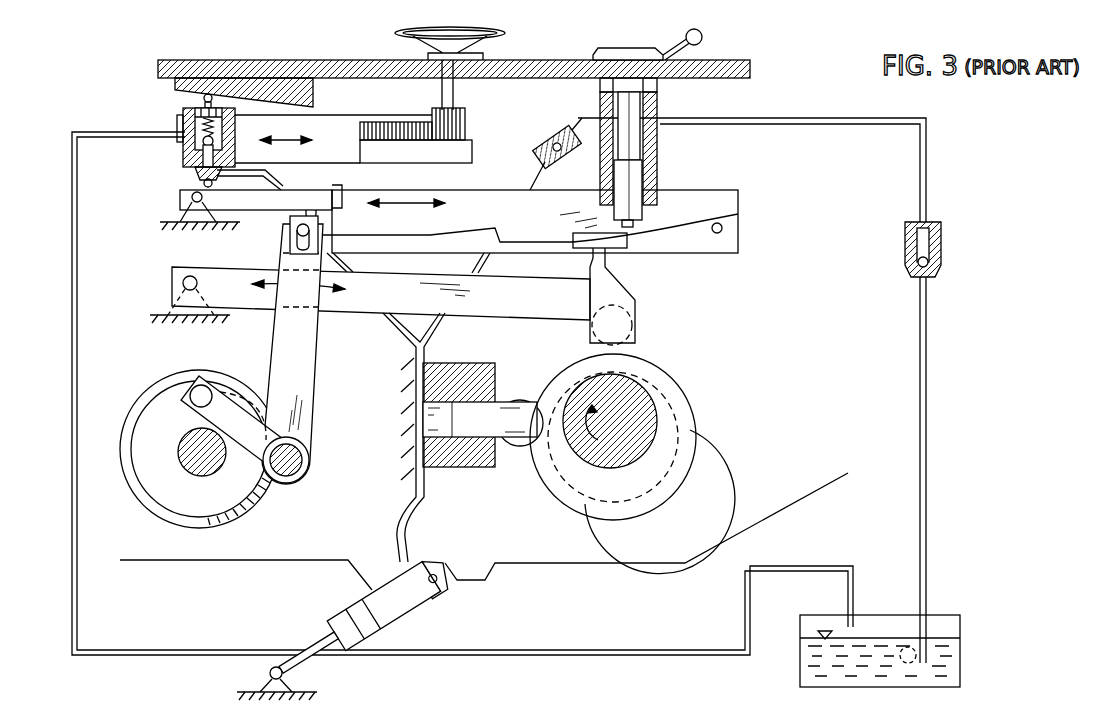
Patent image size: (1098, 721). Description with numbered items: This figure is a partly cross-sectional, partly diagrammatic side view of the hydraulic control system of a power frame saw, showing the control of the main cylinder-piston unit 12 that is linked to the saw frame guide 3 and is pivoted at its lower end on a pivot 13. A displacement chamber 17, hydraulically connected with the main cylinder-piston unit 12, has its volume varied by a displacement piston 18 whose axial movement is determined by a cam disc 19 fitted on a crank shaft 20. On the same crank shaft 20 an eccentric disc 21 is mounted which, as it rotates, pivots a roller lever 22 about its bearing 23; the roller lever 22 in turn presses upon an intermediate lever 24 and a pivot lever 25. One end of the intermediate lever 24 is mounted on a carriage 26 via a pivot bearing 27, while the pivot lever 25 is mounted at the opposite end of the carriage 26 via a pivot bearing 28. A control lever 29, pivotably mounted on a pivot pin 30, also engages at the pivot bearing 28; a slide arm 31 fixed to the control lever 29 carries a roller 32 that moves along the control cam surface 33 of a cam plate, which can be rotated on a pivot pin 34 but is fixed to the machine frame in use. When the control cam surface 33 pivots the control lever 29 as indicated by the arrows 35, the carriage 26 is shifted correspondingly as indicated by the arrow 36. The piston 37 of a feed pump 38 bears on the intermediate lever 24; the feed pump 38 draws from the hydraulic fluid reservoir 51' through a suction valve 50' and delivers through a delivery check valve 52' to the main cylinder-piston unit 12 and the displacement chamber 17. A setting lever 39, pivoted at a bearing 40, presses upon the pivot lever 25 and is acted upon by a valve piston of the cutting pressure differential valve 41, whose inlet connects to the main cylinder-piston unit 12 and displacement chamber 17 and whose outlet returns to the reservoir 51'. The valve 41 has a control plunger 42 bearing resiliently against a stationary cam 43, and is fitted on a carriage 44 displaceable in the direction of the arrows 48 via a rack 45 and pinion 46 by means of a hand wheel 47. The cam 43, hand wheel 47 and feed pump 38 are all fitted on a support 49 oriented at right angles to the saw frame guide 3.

The saw frame guide 3 is at (584, 540).
The main cylinder-piston unit 12 is at (417, 600).
The cylinder pivot 13 is at (270, 673).
The displacement chamber 17 is at (422, 428).
The displacement piston 18 is at (490, 428).
The cam disc 19 is at (680, 468).
The crank shaft 20 is at (648, 427).
The eccentric disc 21 is at (612, 362).
The roller lever 22 is at (607, 289).
The bearing 23 is at (183, 283).
The intermediate lever 24 is at (693, 248).
The pivot lever 25 is at (480, 243).
The carriage 26 is at (700, 208).
The pivot bearing 27 is at (723, 230).
The pivot bearing 28 is at (298, 232).
The control lever 29 is at (303, 341).
The pivot pin 30 is at (305, 468).
The slide arm 31 is at (208, 414).
The roller 32 is at (195, 387).
The control cam surface 33 is at (236, 397).
The pivot pin 34 is at (192, 463).
The arrows 35 is at (297, 287).
The arrow 36 is at (403, 206).
The piston 37 is at (617, 172).
The feed pump 38 is at (657, 166).
The setting lever 39 is at (201, 190).
The bearing 40 is at (190, 200).
The cutting pressure differential valve 41 is at (185, 157).
The control plunger 42 is at (203, 98).
The stationary cam 43 is at (283, 86).
The carriage 44 is at (473, 157).
The rack 45 is at (386, 124).
The pinion 46 is at (466, 110).
The hand wheel 47 is at (497, 42).
The arrows 48 is at (288, 142).
The support 49 is at (184, 62).
The suction valve 50' is at (947, 252).
The hydraulic fluid reservoir 51' is at (858, 651).
The delivery check valve 52' is at (556, 143).